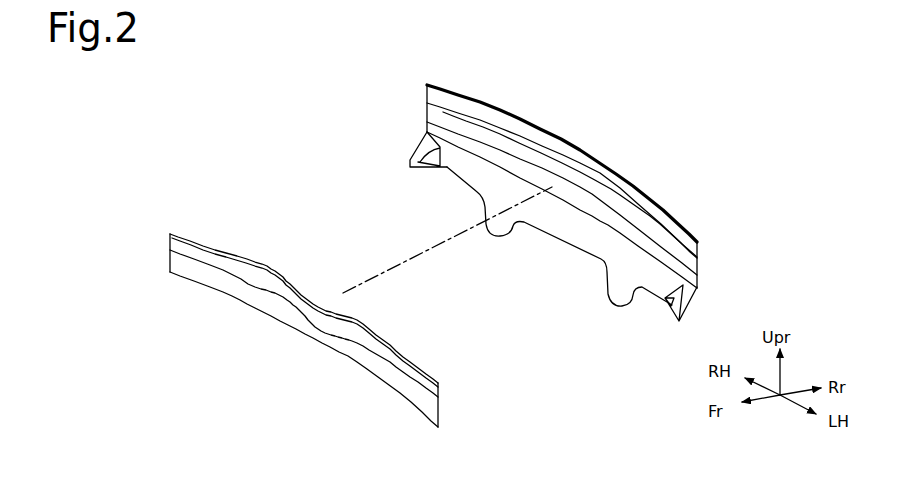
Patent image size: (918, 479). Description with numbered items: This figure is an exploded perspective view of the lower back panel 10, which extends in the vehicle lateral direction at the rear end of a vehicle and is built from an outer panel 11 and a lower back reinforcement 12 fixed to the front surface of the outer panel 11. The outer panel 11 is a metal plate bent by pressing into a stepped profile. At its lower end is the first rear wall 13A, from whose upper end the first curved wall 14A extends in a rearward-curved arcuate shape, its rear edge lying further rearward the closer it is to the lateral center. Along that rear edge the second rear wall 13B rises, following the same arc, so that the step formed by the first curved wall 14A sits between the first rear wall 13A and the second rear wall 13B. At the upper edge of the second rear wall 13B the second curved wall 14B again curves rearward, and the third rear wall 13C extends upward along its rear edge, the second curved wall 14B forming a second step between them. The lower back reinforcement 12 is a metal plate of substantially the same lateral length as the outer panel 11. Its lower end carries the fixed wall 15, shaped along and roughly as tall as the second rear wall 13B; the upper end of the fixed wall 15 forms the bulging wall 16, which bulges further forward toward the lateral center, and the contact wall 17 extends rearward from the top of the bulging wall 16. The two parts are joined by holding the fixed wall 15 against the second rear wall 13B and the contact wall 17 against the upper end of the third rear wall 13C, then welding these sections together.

The lower back panel 10 is at (230, 132).
The outer panel 11 is at (427, 88).
The lower back reinforcement 12 is at (170, 240).
The first rear wall 13A is at (576, 233).
The second rear wall 13B is at (598, 188).
The third rear wall 13C is at (645, 194).
The first curved wall 14A is at (523, 169).
The second curved wall 14B is at (547, 151).
The fixed wall 15 is at (369, 366).
The bulging wall 16 is at (271, 283).
The contact wall 17 is at (438, 384).